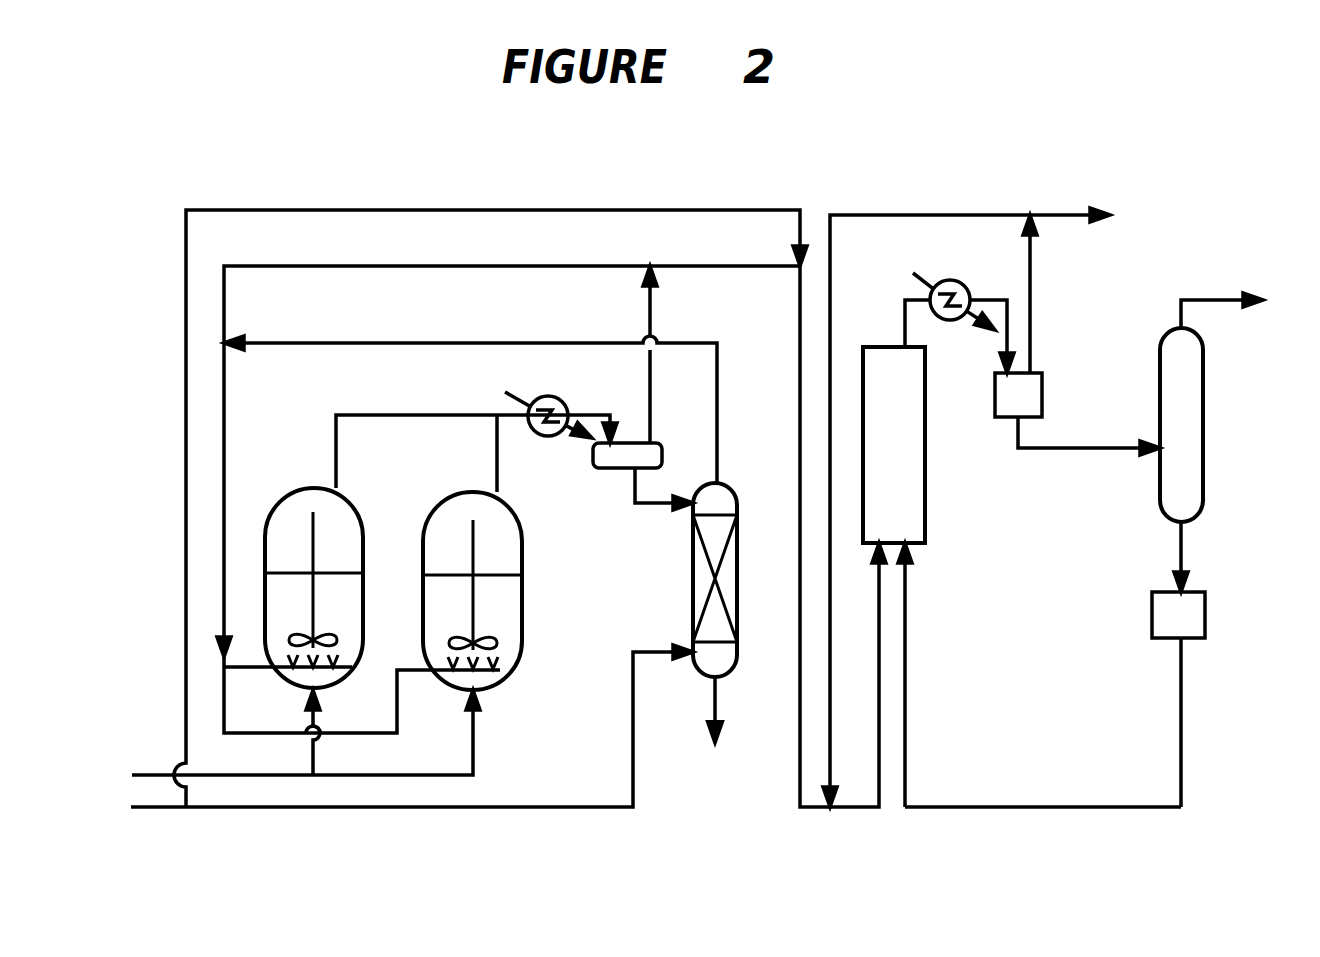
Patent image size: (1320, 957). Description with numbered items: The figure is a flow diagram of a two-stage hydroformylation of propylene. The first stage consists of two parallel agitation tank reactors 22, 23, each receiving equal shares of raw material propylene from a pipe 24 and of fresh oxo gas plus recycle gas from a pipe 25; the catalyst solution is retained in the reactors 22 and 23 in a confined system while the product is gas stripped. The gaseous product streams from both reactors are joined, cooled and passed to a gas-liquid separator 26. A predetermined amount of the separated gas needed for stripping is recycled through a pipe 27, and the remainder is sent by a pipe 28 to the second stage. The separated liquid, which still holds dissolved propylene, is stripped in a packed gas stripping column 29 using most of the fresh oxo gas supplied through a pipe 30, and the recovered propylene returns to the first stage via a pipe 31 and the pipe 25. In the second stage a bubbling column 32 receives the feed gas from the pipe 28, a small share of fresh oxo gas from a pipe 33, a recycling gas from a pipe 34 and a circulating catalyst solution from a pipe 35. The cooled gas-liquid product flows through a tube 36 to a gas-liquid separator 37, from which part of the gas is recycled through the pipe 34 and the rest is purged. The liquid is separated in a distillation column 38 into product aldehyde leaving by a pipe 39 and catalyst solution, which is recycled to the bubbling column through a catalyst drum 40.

The agitation tank reactor 22 is at (345, 497).
The agitation tank reactor 23 is at (552, 500).
The pipe 24 is at (218, 775).
The pipe 25 is at (224, 411).
The gas-liquid separator 26 is at (668, 441).
The pipe 27 is at (368, 267).
The pipe 28 is at (800, 316).
The gas stripping column 29 is at (690, 586).
The pipe 30 is at (360, 808).
The pipe 31 is at (717, 412).
The bubbling column 32 is at (925, 448).
The pipe 33 is at (741, 210).
The pipe 34 is at (830, 262).
The pipe 35 is at (905, 668).
The tube 36 is at (990, 295).
The gas-liquid separator 37 is at (1042, 401).
The distillation column 38 is at (1203, 410).
The pipe 39 is at (1198, 300).
The catalyst drum 40 is at (1205, 608).